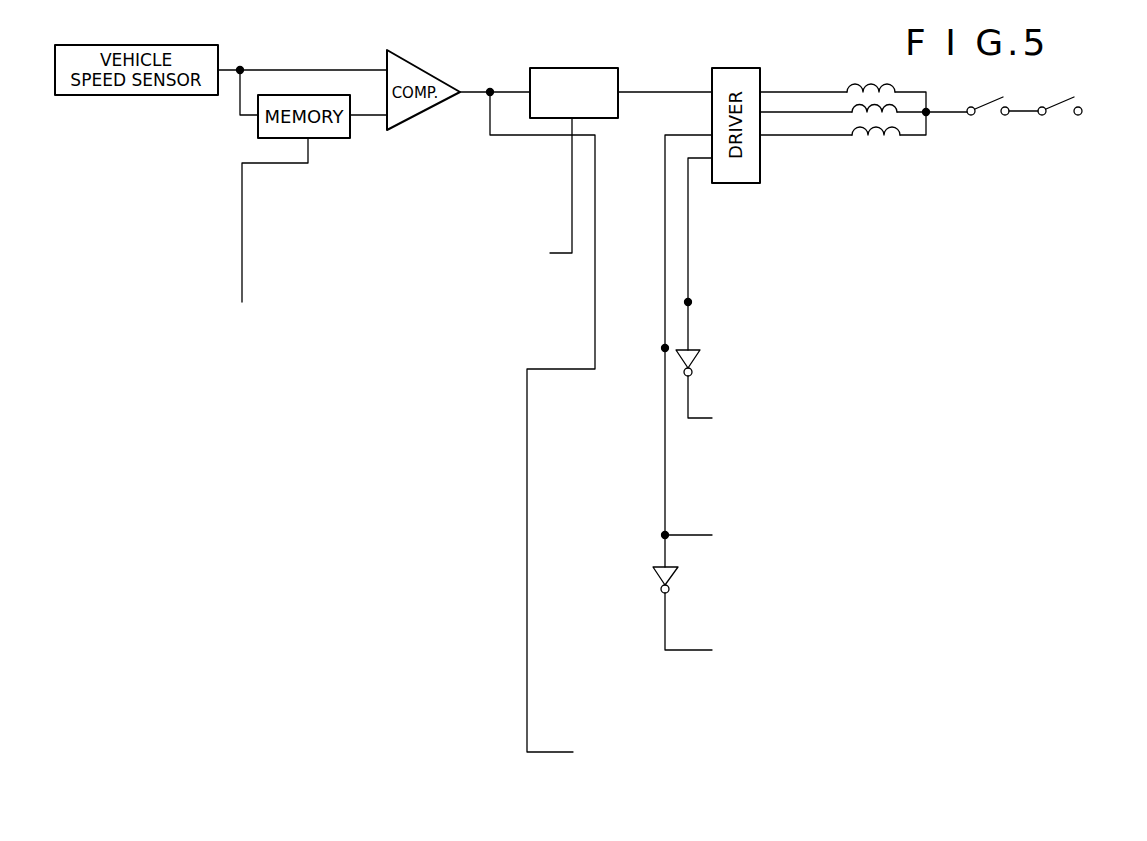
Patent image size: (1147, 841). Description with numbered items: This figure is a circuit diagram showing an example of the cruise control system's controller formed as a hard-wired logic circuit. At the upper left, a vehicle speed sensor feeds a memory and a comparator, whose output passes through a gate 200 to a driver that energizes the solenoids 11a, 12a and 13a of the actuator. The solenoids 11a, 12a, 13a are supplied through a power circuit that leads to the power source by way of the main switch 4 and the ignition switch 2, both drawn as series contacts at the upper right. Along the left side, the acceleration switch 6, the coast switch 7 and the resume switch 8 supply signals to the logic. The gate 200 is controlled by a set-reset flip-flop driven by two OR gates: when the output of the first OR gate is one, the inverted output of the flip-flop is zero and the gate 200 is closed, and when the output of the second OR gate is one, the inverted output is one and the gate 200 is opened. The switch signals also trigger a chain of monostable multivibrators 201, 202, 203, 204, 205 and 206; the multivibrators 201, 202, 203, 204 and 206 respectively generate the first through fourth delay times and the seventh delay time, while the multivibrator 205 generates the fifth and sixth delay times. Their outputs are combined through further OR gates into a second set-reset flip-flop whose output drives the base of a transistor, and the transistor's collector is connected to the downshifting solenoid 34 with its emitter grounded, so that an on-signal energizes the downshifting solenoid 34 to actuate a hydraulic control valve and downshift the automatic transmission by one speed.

The ignition switch 2 is at (593, 434).
The main switch 4 is at (984, 94).
The acceleration switch 6 is at (110, 295).
The coast switch 7 is at (110, 341).
The resume switch 8 is at (113, 388).
The solenoid 11a is at (882, 83).
The solenoid 12a is at (887, 112).
The solenoid 13a is at (863, 137).
The downshifting solenoid 34 is at (1082, 270).
The gate 200 is at (620, 84).
The monostable multivibrator 201 is at (760, 275).
The monostable multivibrator 202 is at (707, 443).
The monostable multivibrator 203 is at (707, 509).
The monostable multivibrator 204 is at (760, 637).
The monostable multivibrator 205 is at (592, 596).
The monostable multivibrator 206 is at (620, 753).